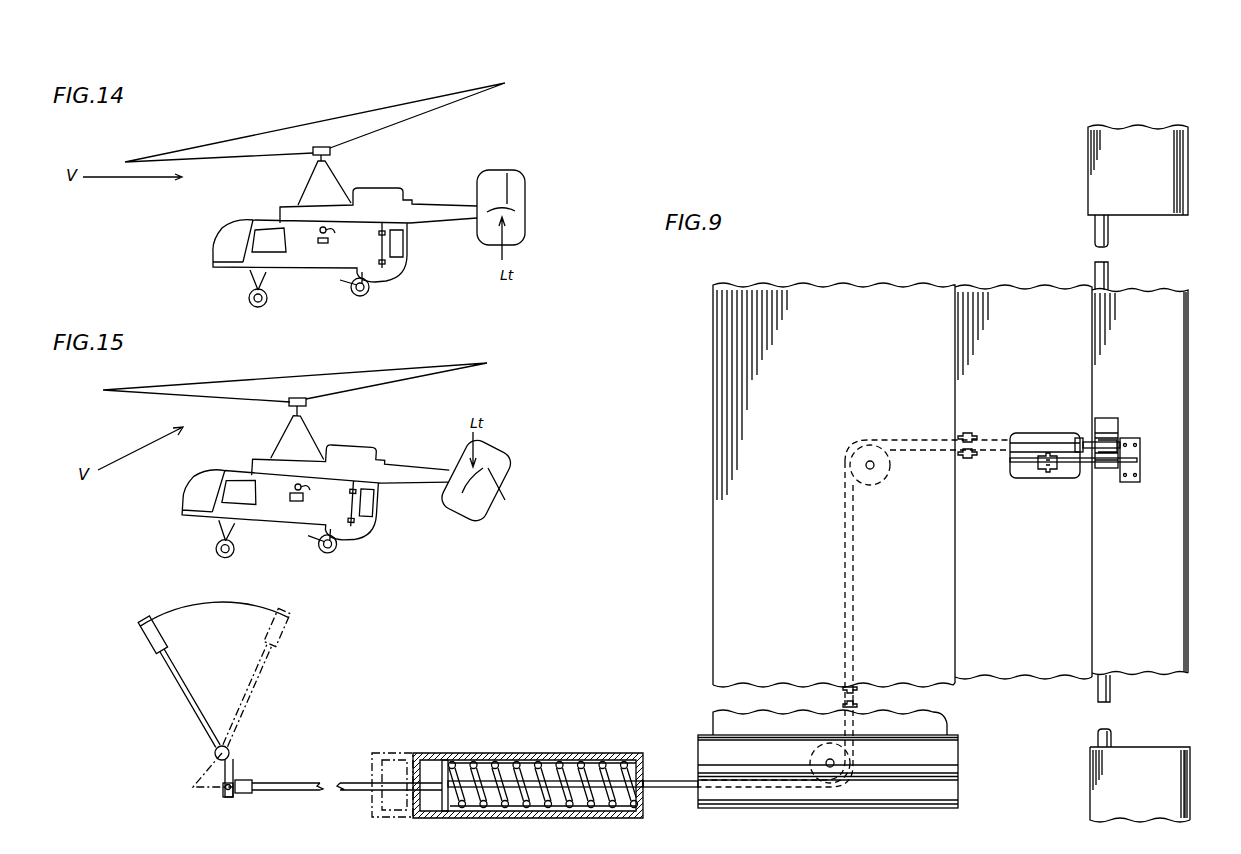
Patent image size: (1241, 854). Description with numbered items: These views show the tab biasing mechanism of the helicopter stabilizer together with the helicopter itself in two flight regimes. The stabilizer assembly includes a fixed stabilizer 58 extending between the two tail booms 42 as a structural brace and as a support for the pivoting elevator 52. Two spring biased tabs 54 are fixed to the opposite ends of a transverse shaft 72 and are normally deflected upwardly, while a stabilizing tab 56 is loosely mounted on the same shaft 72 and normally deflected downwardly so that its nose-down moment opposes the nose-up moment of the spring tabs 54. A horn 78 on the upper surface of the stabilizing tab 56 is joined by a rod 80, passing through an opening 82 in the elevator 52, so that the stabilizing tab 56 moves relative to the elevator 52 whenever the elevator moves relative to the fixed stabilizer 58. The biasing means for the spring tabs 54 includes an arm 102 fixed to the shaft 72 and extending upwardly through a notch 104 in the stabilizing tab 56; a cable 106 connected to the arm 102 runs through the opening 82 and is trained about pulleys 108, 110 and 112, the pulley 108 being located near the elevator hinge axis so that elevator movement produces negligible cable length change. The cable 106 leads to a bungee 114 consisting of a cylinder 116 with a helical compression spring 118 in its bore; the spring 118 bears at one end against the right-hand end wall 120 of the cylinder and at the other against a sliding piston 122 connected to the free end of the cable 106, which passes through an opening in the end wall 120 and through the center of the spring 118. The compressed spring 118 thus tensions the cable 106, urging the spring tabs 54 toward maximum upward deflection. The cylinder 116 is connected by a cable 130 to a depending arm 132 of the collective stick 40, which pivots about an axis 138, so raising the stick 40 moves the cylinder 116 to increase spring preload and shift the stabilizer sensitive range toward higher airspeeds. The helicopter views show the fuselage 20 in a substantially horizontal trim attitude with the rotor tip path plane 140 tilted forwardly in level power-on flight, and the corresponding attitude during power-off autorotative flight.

In FIG. 14, the rotor tip path plane 140 is at (355, 100).
In FIG. 15, the rotor tip path plane 140 is at (333, 373).
In FIG. 14, the fuselage 20 is at (393, 273).
In FIG. 15, the fuselage 20 is at (360, 537).
In FIG. 9, the spring biased tab 54 is at (1188, 182).
In FIG. 9, the transverse shaft 72 is at (1107, 276).
In FIG. 9, the fixed stabilizer 58 is at (898, 290).
In FIG. 9, the elevator 52 is at (1023, 292).
In FIG. 9, the stabilizing tab 56 is at (1188, 525).
In FIG. 9, the pulley 108 is at (978, 433).
In FIG. 9, the cable 106 is at (1035, 445).
In FIG. 9, the notch 104 is at (1112, 425).
In FIG. 9, the arm 102 is at (1118, 437).
In FIG. 9, the rod 80 is at (1018, 463).
In FIG. 9, the opening 82 is at (1030, 472).
In FIG. 9, the horn 78 is at (1078, 477).
In FIG. 9, the pulley 110 is at (882, 480).
In FIG. 9, the pulley 112 is at (812, 757).
In FIG. 9, the tail boom 42 is at (893, 802).
In FIG. 9, the collective stick 40 is at (197, 722).
In FIG. 9, the axis 138 is at (233, 745).
In FIG. 9, the depending arm 132 is at (232, 767).
In FIG. 9, the cable 130 is at (293, 782).
In FIG. 9, the cylinder 116 is at (383, 753).
In FIG. 9, the piston 122 is at (435, 760).
In FIG. 9, the helical compression spring 118 is at (492, 762).
In FIG. 9, the bungee 114 is at (533, 754).
In FIG. 9, the end wall 120 is at (643, 801).